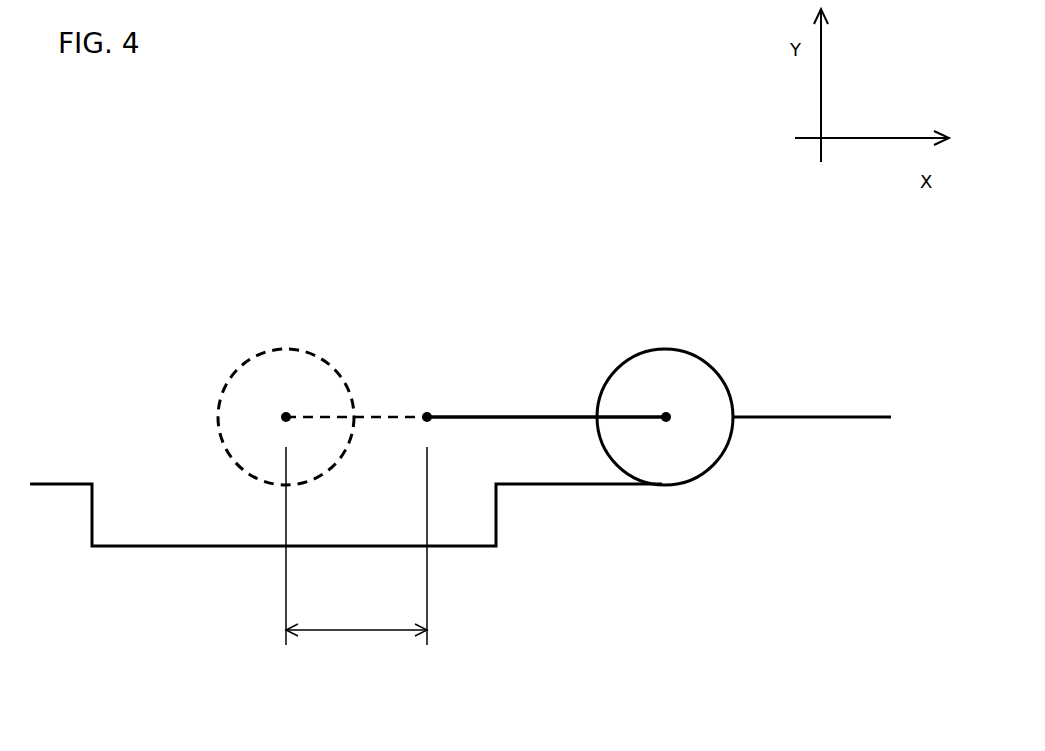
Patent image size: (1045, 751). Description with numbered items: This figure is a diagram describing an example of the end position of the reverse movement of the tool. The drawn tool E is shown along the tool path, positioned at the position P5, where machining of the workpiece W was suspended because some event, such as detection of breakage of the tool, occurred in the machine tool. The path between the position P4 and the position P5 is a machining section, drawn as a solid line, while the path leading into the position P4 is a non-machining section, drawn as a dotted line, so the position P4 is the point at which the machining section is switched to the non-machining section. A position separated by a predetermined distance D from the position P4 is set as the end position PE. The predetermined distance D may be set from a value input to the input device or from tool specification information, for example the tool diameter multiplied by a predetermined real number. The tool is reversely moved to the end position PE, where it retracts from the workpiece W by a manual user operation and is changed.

The workpiece W is at (827, 415).
The tool (end mill) E is at (703, 357).
The end position PE is at (286, 412).
The position P4 is at (427, 414).
The position P5 is at (665, 414).
The predetermined distance D is at (356, 546).